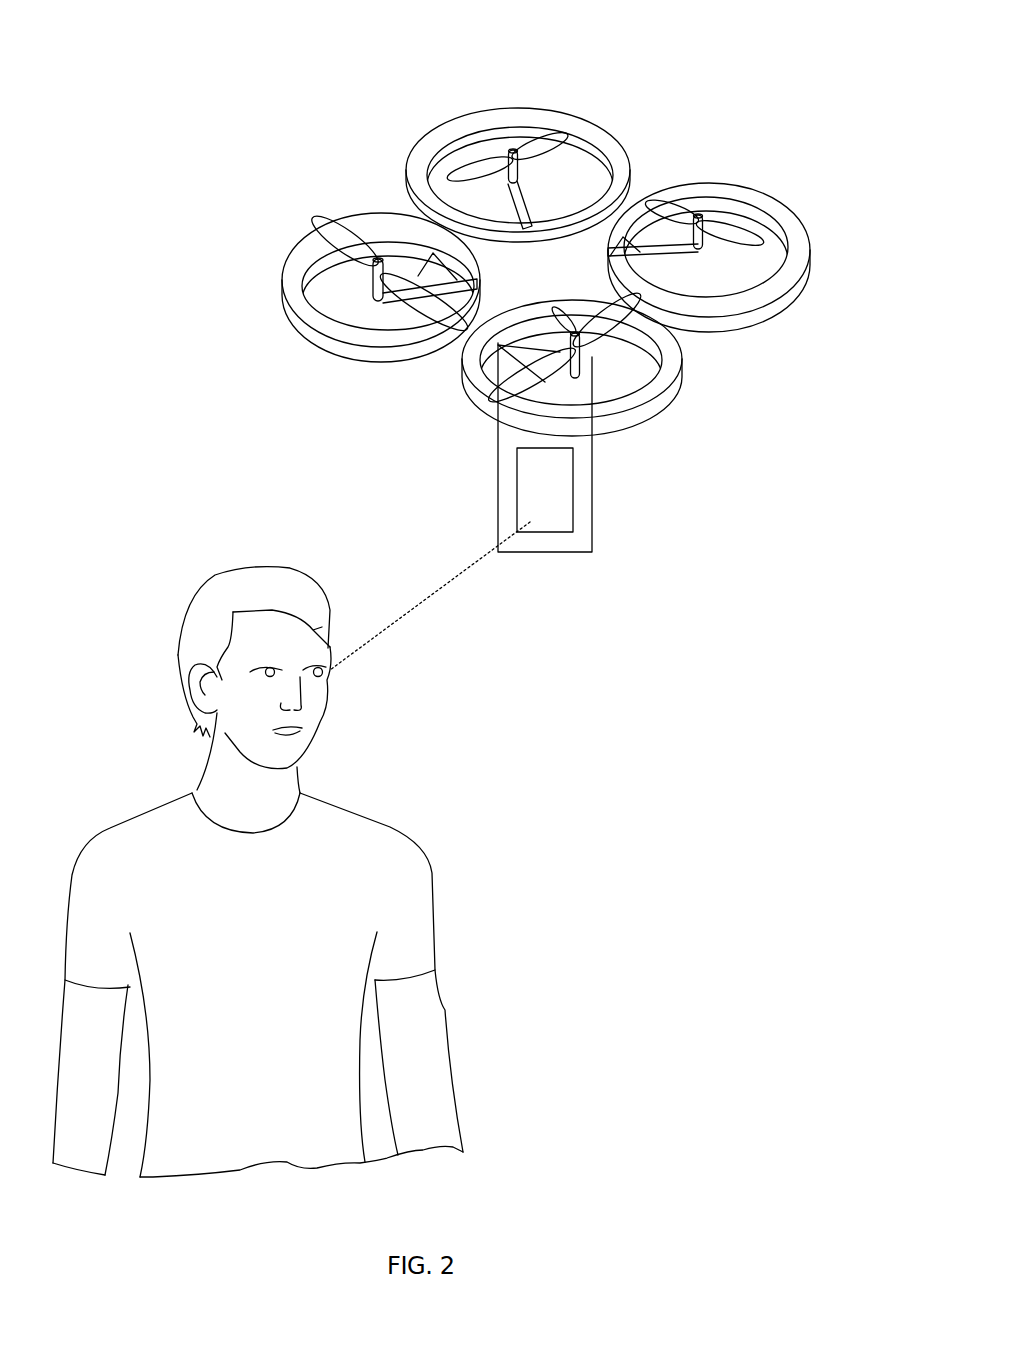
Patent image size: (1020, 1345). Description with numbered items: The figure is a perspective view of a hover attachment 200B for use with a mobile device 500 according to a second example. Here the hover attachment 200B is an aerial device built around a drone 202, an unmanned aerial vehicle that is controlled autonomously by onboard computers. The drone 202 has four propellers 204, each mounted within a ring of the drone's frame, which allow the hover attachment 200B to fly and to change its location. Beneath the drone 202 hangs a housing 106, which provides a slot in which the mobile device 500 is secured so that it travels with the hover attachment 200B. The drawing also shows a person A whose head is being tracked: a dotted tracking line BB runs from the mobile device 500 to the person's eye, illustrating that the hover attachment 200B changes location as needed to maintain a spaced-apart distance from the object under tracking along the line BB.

The hover attachment 200B is at (665, 150).
The drone 202 is at (678, 382).
The propellers 204 is at (475, 167).
The housing 106 is at (553, 540).
The mobile device 500 is at (550, 493).
The user / person A is at (200, 603).
The Line BB is at (408, 608).